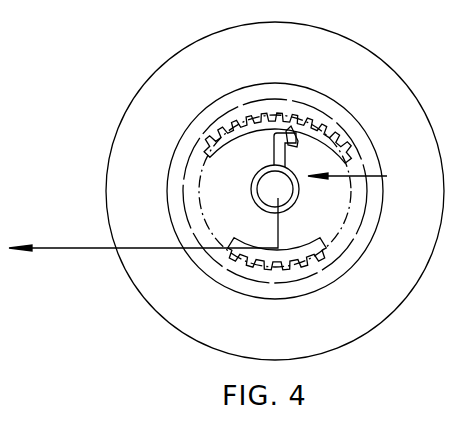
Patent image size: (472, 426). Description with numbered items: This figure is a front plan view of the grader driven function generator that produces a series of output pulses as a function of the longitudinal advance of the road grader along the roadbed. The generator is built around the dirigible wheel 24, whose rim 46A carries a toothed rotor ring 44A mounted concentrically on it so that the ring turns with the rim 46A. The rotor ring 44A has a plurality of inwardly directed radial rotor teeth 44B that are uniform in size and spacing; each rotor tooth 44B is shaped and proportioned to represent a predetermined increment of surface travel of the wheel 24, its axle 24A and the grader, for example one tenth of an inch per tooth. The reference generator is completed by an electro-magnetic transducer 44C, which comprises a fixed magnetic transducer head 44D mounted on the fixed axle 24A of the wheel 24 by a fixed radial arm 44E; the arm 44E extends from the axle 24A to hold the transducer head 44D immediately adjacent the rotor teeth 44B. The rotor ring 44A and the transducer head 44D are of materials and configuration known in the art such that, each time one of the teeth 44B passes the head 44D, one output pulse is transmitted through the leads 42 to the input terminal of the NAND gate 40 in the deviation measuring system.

The dirigible wheel 24 is at (283, 52).
The axle 24A is at (285, 184).
The NAND gate 40 is at (58, 245).
The leads 42 is at (178, 249).
The toothed rotor ring 44A is at (245, 113).
The rotor teeth 44B is at (246, 118).
The electro-magnetic transducer 44C is at (365, 177).
The magnetic transducer head 44D is at (298, 143).
The radial arm 44E is at (252, 191).
The rim 46A is at (326, 102).